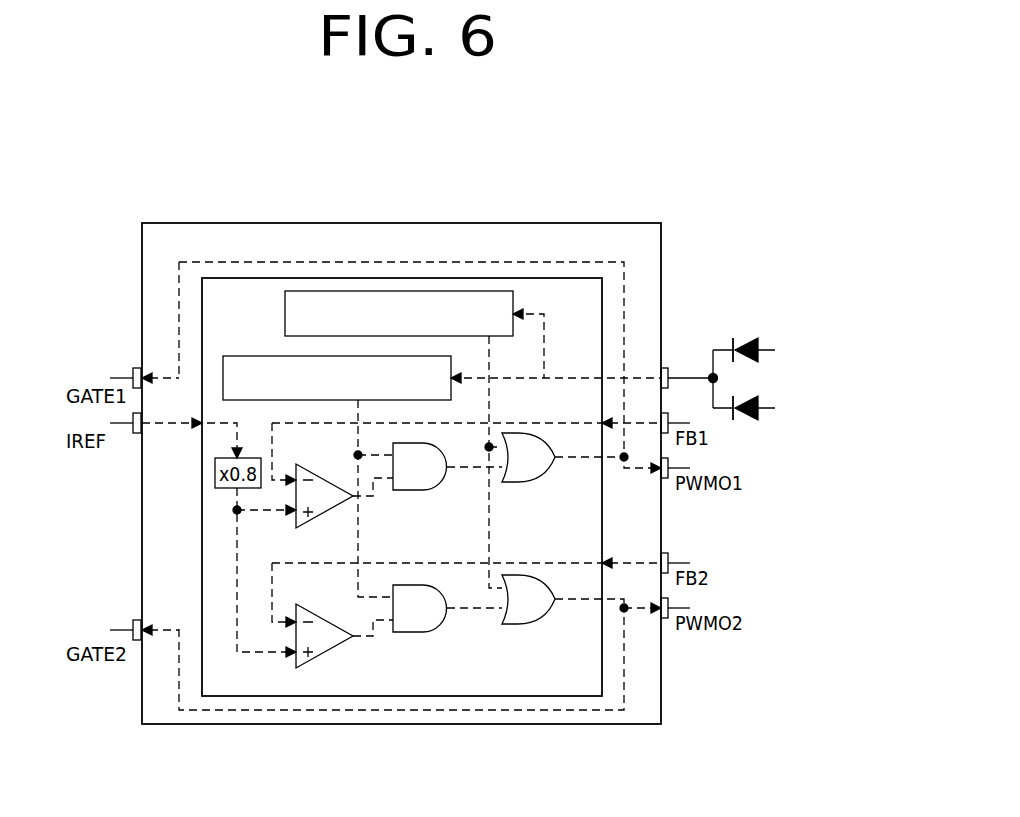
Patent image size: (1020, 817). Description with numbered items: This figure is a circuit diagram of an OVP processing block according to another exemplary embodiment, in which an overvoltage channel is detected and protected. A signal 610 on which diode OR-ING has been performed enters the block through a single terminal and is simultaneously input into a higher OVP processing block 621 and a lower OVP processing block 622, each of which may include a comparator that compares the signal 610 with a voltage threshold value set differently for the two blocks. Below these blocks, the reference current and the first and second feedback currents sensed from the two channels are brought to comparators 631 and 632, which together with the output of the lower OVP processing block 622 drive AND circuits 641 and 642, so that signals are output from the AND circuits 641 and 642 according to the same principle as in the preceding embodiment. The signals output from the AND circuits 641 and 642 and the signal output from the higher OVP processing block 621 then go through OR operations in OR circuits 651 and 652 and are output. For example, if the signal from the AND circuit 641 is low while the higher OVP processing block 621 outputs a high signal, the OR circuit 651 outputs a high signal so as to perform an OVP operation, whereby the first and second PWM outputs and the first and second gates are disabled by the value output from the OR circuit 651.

The signal on which diode OR-ING has been performed 610 is at (688, 378).
The higher OVP processing block 621 is at (464, 291).
The lower OVP processing block 622 is at (238, 356).
The first comparator 631 is at (324, 514).
The second comparator 632 is at (334, 645).
The AND circuit 641 is at (425, 490).
The AND circuit 642 is at (425, 632).
The OR circuit 651 is at (533, 482).
The OR circuit 652 is at (533, 624).